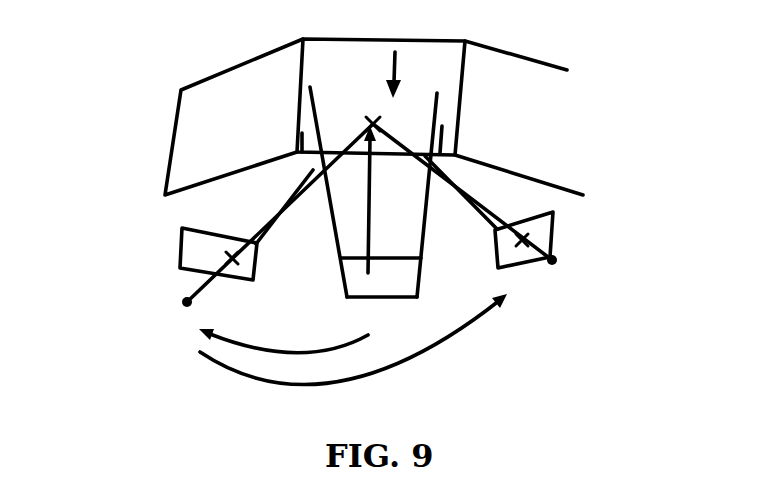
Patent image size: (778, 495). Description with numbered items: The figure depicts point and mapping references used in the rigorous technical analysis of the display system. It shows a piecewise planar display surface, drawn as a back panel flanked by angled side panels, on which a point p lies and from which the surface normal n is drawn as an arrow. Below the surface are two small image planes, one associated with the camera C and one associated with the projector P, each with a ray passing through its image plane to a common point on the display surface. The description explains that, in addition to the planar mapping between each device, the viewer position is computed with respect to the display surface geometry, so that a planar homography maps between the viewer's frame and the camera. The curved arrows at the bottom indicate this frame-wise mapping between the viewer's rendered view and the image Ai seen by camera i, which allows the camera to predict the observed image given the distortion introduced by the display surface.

The point p on the planar surface p is at (328, 177).
The surface normal vector n is at (427, 55).
The camera center C is at (272, 240).
The projector center P is at (472, 213).
The projected image point A_i Ai is at (373, 339).